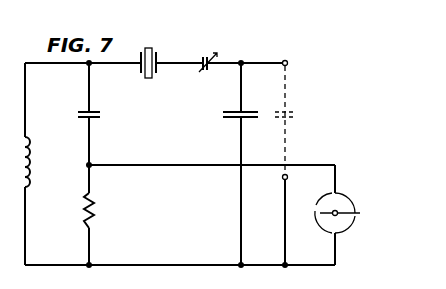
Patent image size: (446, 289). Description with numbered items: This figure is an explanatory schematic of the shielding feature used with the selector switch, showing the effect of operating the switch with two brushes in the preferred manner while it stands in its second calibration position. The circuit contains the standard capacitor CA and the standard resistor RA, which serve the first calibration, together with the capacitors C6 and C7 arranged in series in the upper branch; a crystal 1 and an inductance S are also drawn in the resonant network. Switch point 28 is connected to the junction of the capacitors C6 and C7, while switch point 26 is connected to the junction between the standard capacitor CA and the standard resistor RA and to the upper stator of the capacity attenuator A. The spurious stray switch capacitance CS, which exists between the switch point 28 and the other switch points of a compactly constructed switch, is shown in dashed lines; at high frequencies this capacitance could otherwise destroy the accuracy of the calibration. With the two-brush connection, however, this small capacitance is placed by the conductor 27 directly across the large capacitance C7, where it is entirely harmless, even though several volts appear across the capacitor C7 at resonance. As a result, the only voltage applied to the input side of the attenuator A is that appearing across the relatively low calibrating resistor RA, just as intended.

The crystal 1 is at (147, 80).
The switch point 26 is at (282, 179).
The conductor 27 is at (284, 222).
The switch point 28 is at (283, 66).
The capacity attenuator A is at (326, 197).
The coil S is at (34, 149).
The standard capacitor CA is at (100, 113).
The capacitor C6 is at (207, 74).
The capacitor C7 is at (222, 116).
The stray switch capacitance CS is at (278, 114).
The standard resistor RA is at (94, 209).